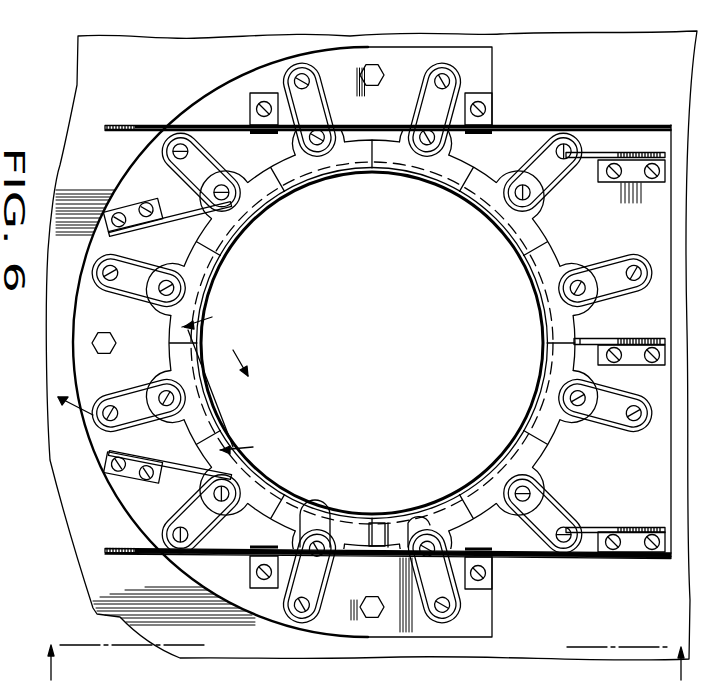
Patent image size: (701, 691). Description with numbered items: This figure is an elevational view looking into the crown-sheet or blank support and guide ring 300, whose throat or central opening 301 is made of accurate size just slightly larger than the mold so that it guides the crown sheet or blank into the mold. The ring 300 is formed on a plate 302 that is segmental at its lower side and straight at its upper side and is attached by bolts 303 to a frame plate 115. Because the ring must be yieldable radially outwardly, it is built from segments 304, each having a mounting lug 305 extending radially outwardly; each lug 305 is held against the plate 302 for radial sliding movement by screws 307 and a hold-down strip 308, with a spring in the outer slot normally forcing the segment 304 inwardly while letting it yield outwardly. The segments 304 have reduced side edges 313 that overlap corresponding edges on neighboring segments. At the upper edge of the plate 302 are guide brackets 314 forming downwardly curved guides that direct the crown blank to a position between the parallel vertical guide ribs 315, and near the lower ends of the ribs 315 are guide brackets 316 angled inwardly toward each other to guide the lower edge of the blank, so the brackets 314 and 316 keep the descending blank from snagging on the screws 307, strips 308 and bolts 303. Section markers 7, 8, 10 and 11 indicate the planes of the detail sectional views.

The frame plate 115 is at (614, 104).
The ring 300 is at (340, 501).
The throat or central opening 301 is at (413, 338).
The plate 302 is at (668, 560).
The bolts 303 is at (393, 85).
The segments 304 is at (262, 204).
The mounting lug 305 is at (333, 101).
The screws 307 is at (107, 282).
The hold-down strip 308 is at (212, 166).
The reduced side edges 313 is at (288, 512).
The guide brackets 314 is at (644, 186).
The vertical guide ribs 315 is at (573, 126).
The guide brackets 316 is at (158, 197).
The section line 7- 7 is at (362, 651).
The section line 8- 8 is at (158, 395).
The section line 10- 10 is at (227, 381).
The section line 11- 11 is at (19, 681).